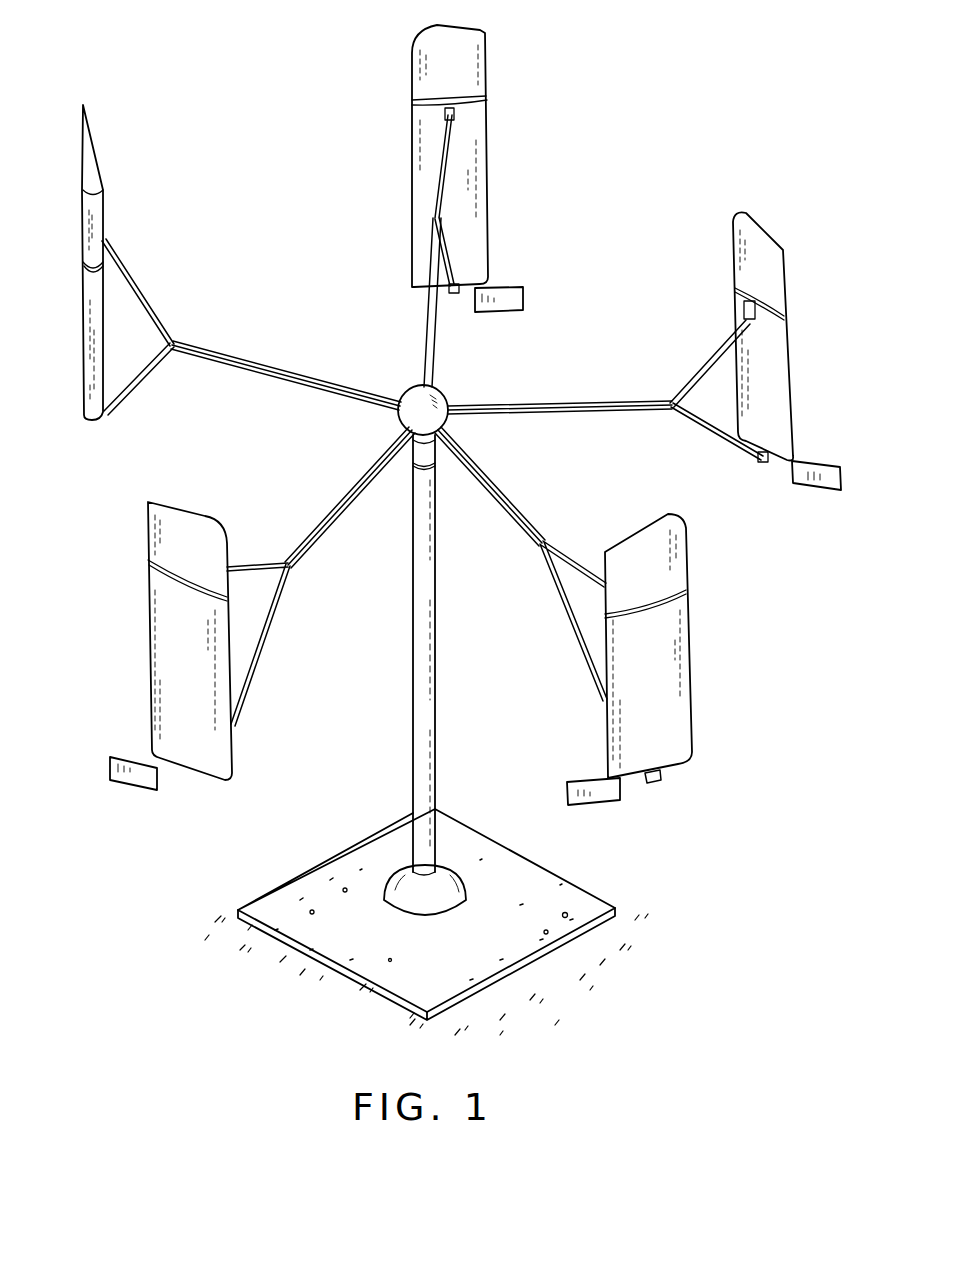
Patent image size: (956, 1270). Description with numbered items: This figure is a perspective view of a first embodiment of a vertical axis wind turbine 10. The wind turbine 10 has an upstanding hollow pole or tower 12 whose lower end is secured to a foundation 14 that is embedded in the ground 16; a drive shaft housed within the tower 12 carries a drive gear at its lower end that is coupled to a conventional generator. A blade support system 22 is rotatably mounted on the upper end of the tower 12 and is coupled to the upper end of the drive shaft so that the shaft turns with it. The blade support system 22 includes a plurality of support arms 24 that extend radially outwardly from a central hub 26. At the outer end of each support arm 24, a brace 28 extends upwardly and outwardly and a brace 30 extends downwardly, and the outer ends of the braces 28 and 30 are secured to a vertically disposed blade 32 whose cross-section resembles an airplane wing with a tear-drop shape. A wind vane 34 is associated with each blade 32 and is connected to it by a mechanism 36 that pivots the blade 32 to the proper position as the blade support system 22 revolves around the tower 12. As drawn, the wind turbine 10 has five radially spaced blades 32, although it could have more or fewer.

The vertical axis wind turbine 10 is at (580, 202).
The tower 12 is at (395, 720).
The foundation 14 is at (490, 876).
The ground 16 is at (586, 1018).
The blade support system 22 is at (318, 466).
The support arm 24 is at (300, 375).
The central hub 26 is at (445, 398).
The brace 28 is at (135, 287).
The brace 30 is at (140, 385).
The blade 32 is at (120, 214).
The wind vane 34 is at (812, 475).
The mechanism 36 is at (660, 802).